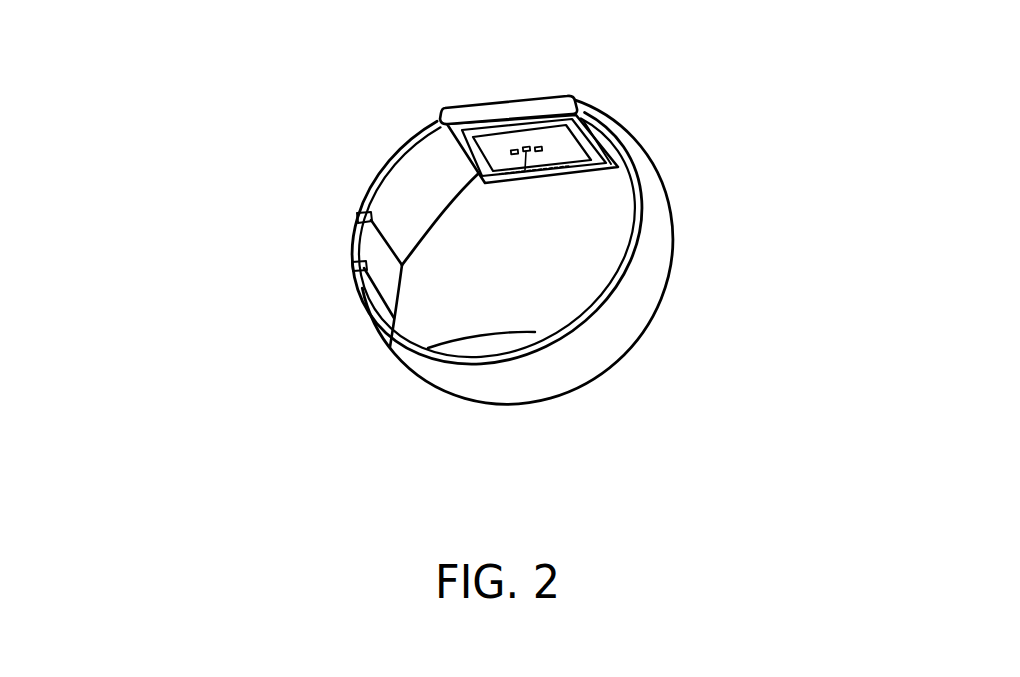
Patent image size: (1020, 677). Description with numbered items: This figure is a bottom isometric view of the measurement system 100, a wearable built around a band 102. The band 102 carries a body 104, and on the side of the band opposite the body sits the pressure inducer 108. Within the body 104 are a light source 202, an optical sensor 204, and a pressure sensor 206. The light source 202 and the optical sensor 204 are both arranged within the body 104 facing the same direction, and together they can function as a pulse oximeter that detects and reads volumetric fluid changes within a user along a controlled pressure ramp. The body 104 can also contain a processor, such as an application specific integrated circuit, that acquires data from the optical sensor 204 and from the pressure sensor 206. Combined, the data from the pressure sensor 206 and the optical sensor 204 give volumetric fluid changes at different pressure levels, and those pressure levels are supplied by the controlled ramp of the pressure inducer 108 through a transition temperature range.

The measurement system 100 is at (184, 60).
The band 102 is at (630, 292).
The body 104 is at (556, 105).
The pressure inducer 108 is at (482, 342).
The light source 202 is at (506, 171).
The optical sensor 204 is at (513, 154).
The pressure sensor 206 is at (538, 154).